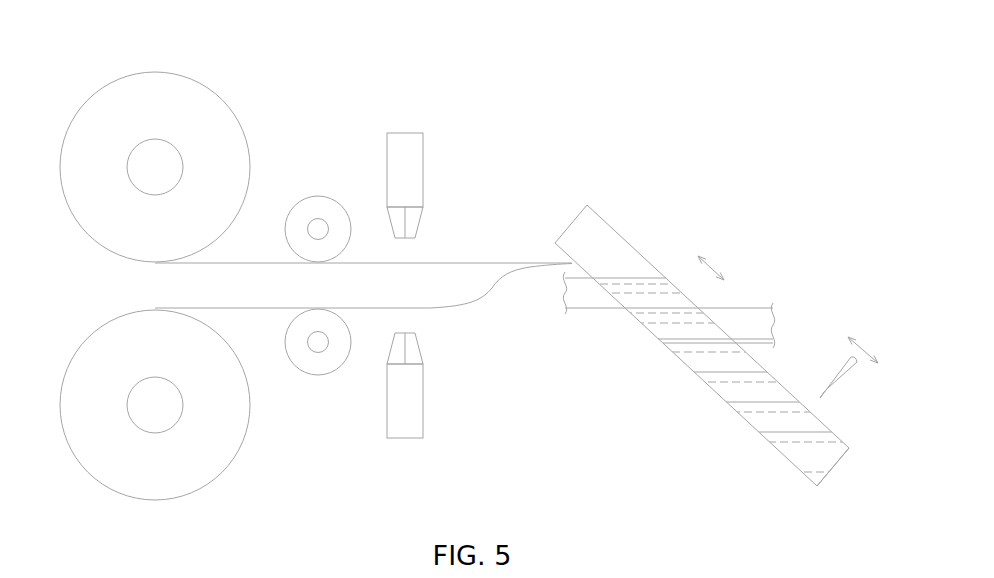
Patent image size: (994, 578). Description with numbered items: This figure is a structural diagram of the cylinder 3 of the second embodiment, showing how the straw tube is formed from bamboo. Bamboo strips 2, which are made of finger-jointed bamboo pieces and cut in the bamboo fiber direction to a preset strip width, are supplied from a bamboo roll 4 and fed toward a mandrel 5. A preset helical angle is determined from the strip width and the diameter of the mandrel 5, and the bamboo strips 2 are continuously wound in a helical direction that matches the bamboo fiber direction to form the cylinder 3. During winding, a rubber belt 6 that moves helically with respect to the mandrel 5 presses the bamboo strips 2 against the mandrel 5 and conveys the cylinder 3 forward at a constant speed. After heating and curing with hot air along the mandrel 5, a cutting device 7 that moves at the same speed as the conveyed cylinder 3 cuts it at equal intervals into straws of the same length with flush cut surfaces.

The bamboo strip 2 is at (400, 185).
The cylinder 3 is at (784, 484).
The bamboo roll 4 is at (143, 257).
The mandrel 5 is at (705, 301).
The rubber belt 6 is at (687, 291).
The cutting device 7 is at (865, 376).